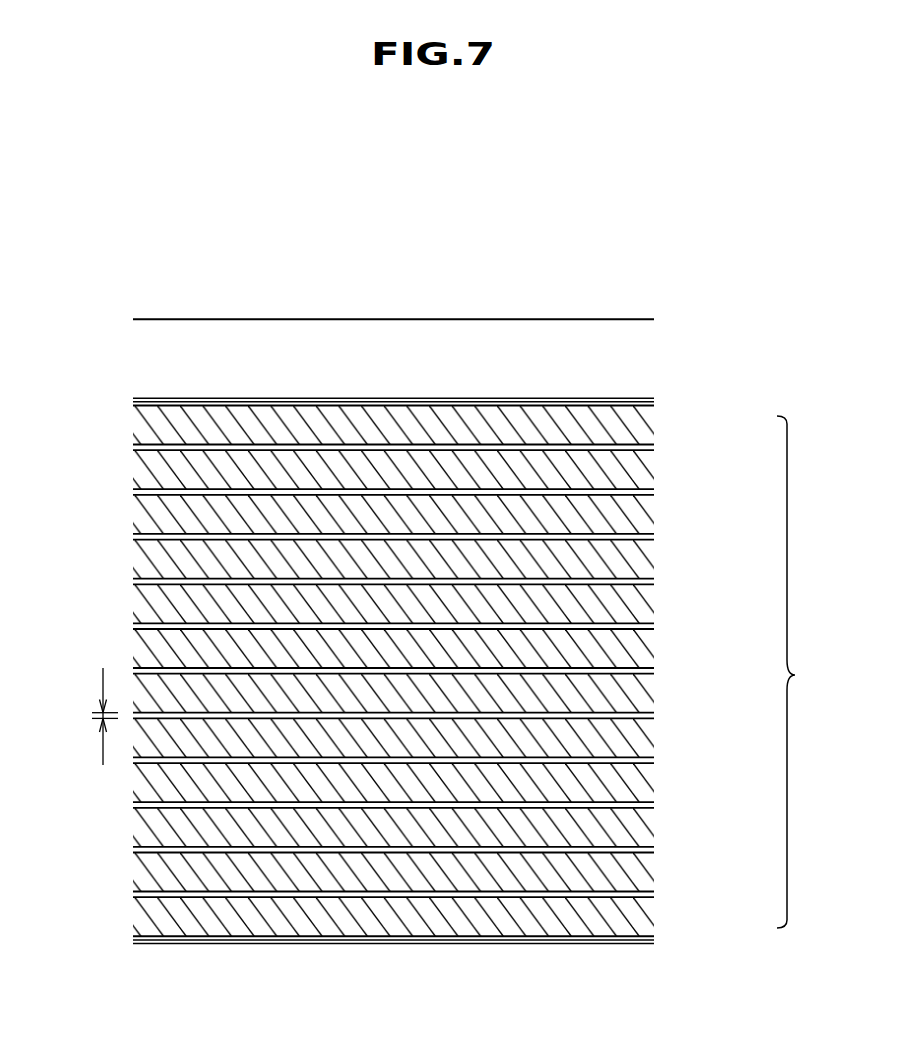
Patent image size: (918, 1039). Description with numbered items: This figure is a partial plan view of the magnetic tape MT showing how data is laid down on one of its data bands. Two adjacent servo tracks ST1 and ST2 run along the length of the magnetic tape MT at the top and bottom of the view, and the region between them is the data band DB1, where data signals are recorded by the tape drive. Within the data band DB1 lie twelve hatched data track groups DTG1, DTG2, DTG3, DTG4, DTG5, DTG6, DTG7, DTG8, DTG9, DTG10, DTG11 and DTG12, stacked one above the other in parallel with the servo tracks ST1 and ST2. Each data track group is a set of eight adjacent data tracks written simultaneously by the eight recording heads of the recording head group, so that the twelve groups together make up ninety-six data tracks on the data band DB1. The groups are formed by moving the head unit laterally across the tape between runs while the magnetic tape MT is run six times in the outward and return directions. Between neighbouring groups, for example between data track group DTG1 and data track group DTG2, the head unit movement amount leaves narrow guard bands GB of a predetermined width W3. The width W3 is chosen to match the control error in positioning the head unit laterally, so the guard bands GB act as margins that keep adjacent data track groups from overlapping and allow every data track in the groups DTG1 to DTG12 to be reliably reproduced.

The magnetic tape MT is at (530, 296).
The servo track ST1 is at (362, 400).
The servo track ST2 is at (362, 947).
The data track group DTG1 is at (635, 428).
The data track group DTG2 is at (635, 472).
The data track group DTG3 is at (635, 517).
The data track group DTG4 is at (635, 562).
The data track group DTG5 is at (635, 606).
The data track group DTG6 is at (635, 651).
The data track group DTG7 is at (635, 696).
The data track group DTG8 is at (635, 740).
The data track group DTG9 is at (635, 785).
The data track group DTG10 is at (635, 830).
The data track group DTG11 is at (635, 874).
The data track group DTG12 is at (635, 919).
The data band DB1 is at (815, 672).
The guard band GB is at (132, 537).
The width of guard band W3 is at (87, 716).